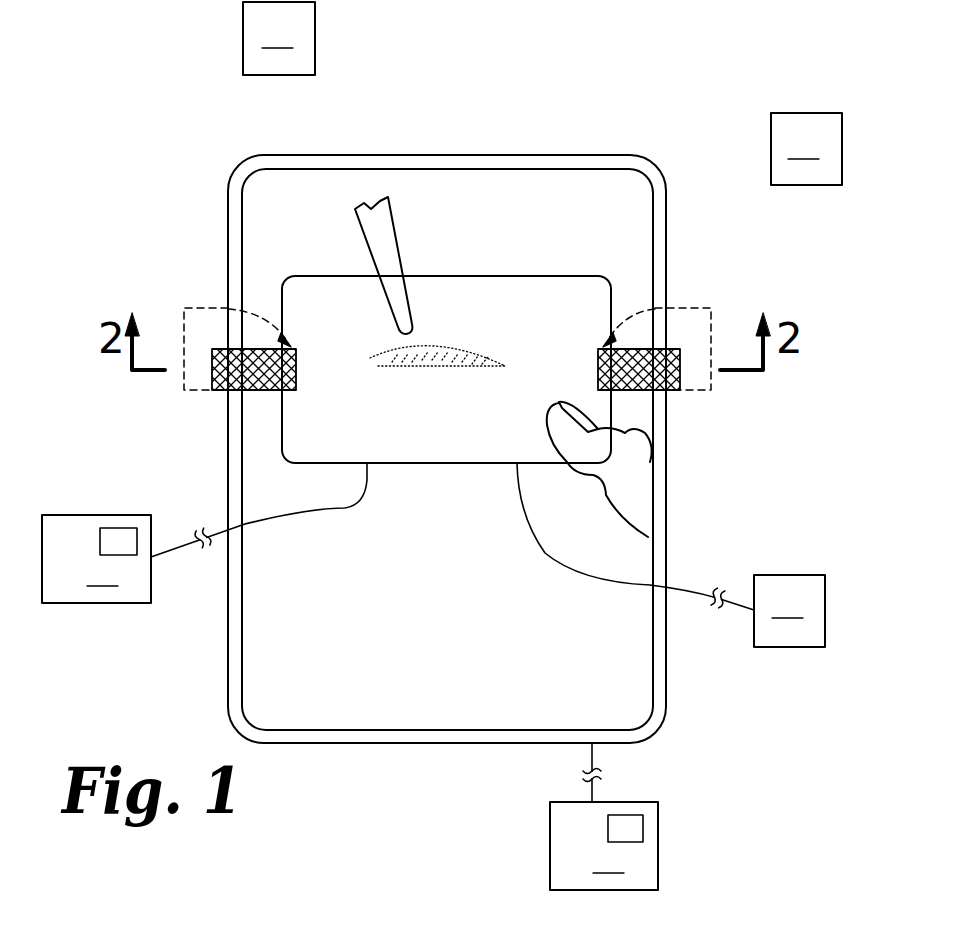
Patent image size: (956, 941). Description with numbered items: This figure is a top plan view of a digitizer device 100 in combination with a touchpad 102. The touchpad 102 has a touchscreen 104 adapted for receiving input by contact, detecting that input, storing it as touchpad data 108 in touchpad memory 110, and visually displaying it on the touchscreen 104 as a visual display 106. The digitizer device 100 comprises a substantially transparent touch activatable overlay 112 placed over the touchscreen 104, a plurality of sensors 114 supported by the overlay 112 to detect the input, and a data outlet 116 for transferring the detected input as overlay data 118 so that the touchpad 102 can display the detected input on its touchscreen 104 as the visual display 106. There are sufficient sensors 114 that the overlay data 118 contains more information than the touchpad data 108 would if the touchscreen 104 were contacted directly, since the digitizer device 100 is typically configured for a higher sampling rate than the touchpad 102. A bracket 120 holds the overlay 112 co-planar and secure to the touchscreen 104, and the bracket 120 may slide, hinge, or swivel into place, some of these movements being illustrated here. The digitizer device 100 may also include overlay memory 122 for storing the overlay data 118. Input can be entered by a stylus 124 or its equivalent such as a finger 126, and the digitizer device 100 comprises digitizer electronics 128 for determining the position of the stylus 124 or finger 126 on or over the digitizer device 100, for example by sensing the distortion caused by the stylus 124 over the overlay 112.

The digitizer device 100 is at (412, 489).
The touchpad 102 is at (333, 743).
The touchscreen 104 is at (465, 700).
The visual display 106 is at (390, 372).
The touchpad data 108 is at (627, 823).
The touchpad memory 110 is at (631, 816).
The touch activatable overlay 112 is at (282, 425).
The sensors 114 is at (360, 277).
The data outlet 116 is at (592, 297).
The overlay data 118 is at (118, 538).
The bracket 120 is at (257, 392).
The overlay memory 122 is at (204, 533).
The stylus 124 is at (388, 248).
The finger 126 is at (647, 441).
The digitizer electronics 128 is at (671, 555).